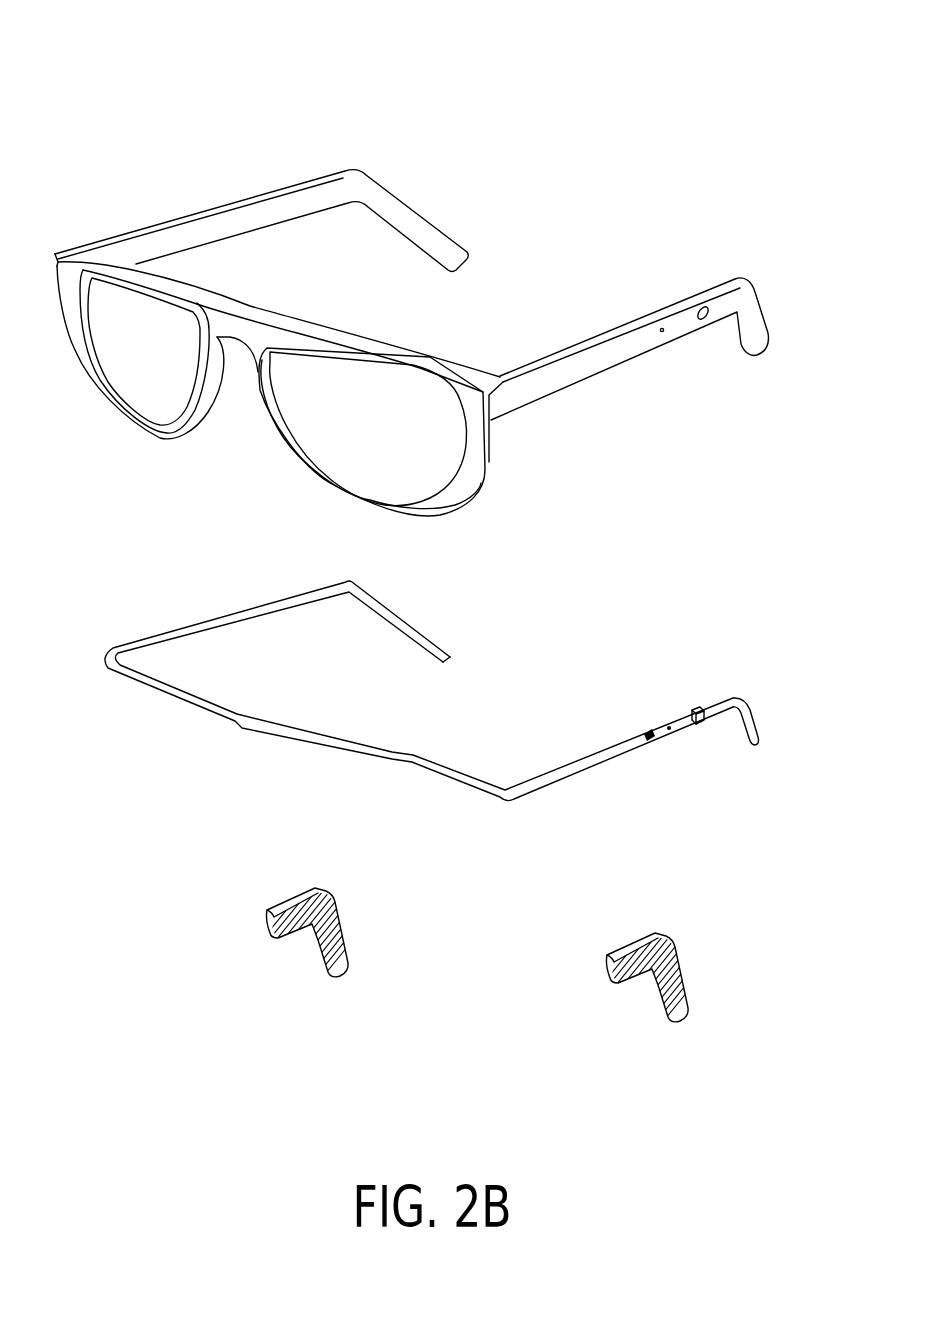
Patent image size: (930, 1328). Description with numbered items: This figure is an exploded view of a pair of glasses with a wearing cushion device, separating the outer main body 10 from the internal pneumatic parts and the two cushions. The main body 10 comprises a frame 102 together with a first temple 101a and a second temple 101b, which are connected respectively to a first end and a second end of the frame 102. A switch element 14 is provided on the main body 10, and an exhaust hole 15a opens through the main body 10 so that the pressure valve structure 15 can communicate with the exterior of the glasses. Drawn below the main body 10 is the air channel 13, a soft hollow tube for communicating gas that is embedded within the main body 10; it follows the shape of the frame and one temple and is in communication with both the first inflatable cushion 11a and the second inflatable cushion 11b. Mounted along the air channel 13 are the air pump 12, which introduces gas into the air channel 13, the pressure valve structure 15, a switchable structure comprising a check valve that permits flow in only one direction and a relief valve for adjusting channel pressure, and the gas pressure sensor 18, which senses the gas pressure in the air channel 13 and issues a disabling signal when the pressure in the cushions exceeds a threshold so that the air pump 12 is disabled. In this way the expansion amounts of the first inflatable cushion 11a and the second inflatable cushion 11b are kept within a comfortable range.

The main body 10 is at (290, 86).
The frame 102 is at (257, 333).
The first temple 101a is at (361, 195).
The second temple 101b is at (623, 332).
The switch element 14 is at (702, 306).
The exhaust hole 15a is at (664, 336).
The air channel 13 is at (588, 757).
The pressure valve structure 15 is at (650, 732).
The air pump 12 is at (697, 710).
The gas pressure sensor 18 is at (675, 729).
The first inflatable cushion 11a is at (327, 910).
The second inflatable cushion 11b is at (665, 963).